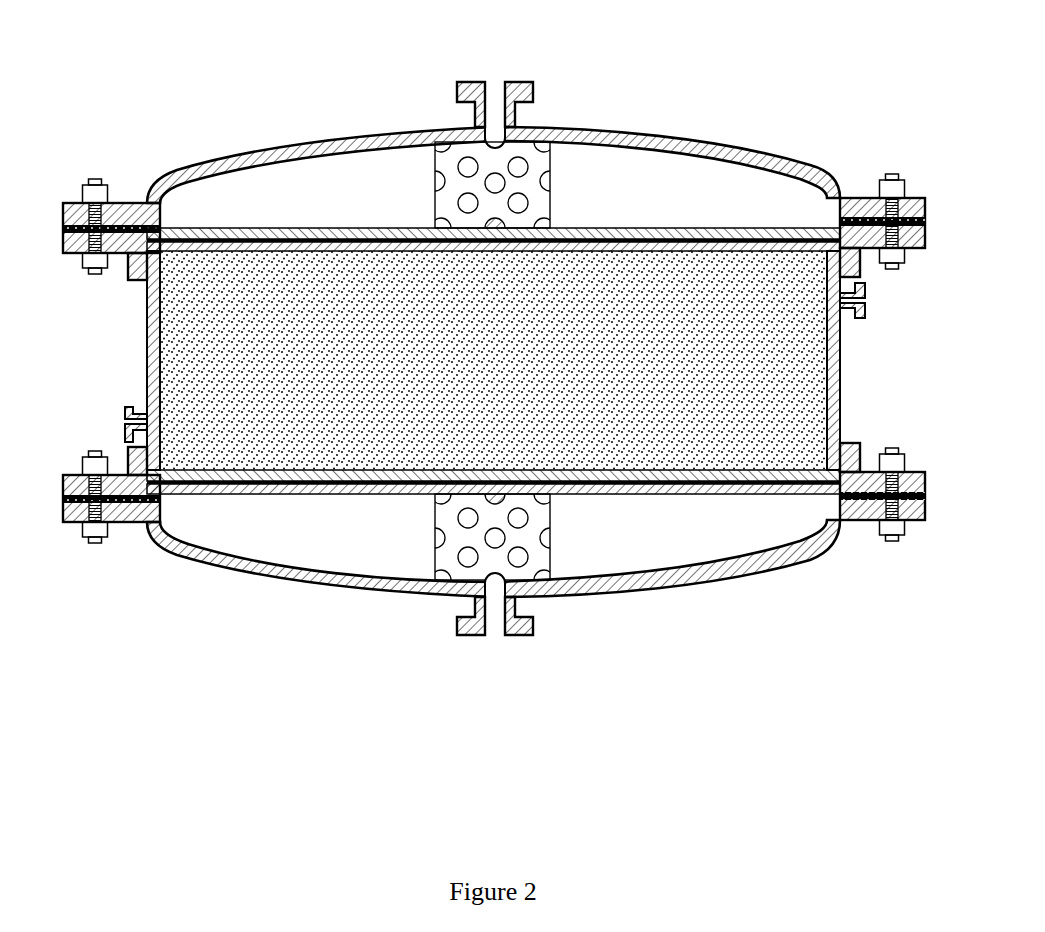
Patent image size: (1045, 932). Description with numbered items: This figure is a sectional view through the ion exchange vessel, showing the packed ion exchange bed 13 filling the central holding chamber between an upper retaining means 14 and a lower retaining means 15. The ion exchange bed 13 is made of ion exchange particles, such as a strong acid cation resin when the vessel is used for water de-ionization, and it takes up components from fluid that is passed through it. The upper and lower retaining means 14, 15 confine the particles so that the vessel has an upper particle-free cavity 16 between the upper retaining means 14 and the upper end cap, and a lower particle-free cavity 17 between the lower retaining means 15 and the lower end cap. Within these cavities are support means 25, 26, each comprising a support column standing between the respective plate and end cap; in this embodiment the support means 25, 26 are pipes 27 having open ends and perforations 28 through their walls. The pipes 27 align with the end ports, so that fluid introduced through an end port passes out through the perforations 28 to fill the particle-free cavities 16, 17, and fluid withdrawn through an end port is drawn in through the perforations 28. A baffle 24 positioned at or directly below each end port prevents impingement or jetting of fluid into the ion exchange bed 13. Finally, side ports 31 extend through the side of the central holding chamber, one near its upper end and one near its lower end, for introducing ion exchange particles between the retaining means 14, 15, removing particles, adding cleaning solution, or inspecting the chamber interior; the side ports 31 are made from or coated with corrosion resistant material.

The ion exchange bed 13 is at (310, 318).
The upper retaining means 14 is at (787, 228).
The lower retaining means 15 is at (680, 492).
The upper particle-free cavity 16 is at (703, 168).
The lower particle-free cavity 17 is at (610, 548).
The baffle 24 is at (497, 500).
The upper support means 25 is at (435, 166).
The lower support means 26 is at (435, 560).
The pipe 27 is at (462, 150).
The perforation 28 is at (520, 163).
The side port 31 is at (865, 288).